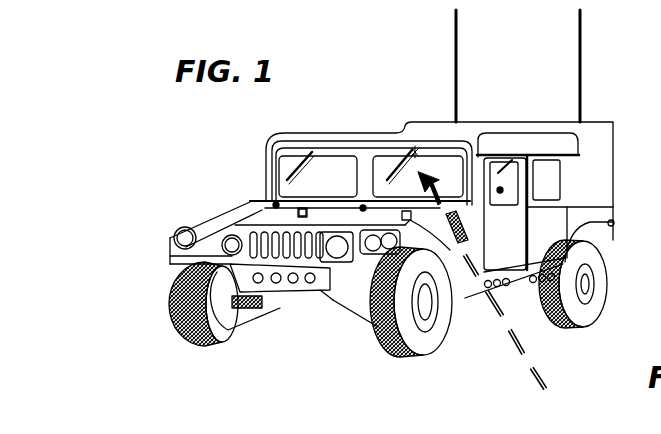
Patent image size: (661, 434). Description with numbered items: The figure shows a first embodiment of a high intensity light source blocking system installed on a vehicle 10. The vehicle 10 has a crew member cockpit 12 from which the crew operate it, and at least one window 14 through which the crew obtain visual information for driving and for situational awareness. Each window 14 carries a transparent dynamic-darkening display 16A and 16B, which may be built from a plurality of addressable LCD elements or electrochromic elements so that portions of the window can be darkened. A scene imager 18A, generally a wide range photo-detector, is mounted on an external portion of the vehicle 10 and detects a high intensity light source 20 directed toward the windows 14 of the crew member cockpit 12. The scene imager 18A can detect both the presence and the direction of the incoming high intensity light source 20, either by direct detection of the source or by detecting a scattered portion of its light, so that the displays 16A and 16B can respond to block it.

The vehicle 10 is at (270, 148).
The crew member cockpit 12 is at (498, 173).
The window 14 is at (333, 177).
The transparent dynamic-darkening display 16A is at (310, 170).
The transparent dynamic-darkening display 16B is at (432, 172).
The scene imager 18A is at (300, 210).
The high intensity light source 20 is at (537, 380).